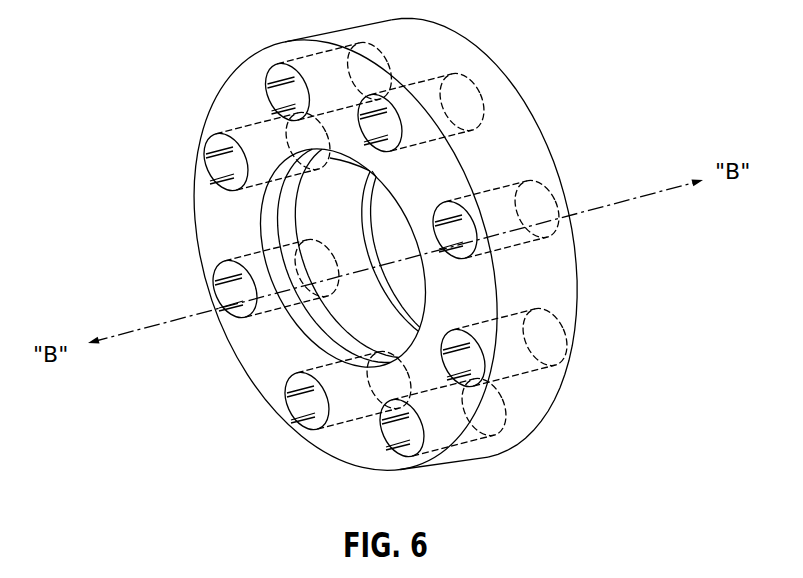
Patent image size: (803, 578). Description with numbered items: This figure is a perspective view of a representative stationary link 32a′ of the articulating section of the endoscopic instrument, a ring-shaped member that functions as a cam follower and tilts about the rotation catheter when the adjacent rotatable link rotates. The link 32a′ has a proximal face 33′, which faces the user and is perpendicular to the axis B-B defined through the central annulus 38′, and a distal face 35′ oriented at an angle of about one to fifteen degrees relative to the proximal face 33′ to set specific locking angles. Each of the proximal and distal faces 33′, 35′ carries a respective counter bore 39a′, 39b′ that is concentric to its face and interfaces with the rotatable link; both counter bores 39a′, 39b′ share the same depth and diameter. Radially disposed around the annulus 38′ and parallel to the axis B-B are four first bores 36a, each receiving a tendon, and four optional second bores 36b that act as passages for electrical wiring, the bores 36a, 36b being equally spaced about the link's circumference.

The proximal face 33′ is at (477, 47).
The stationary link 32a′ is at (520, 148).
The distal face 35′ is at (267, 373).
The first bores 36a is at (233, 162).
The second bores 36b is at (283, 91).
The annulus 38′ is at (332, 243).
The counter bore 39a′ is at (386, 282).
The counter bore 39b′ is at (327, 322).